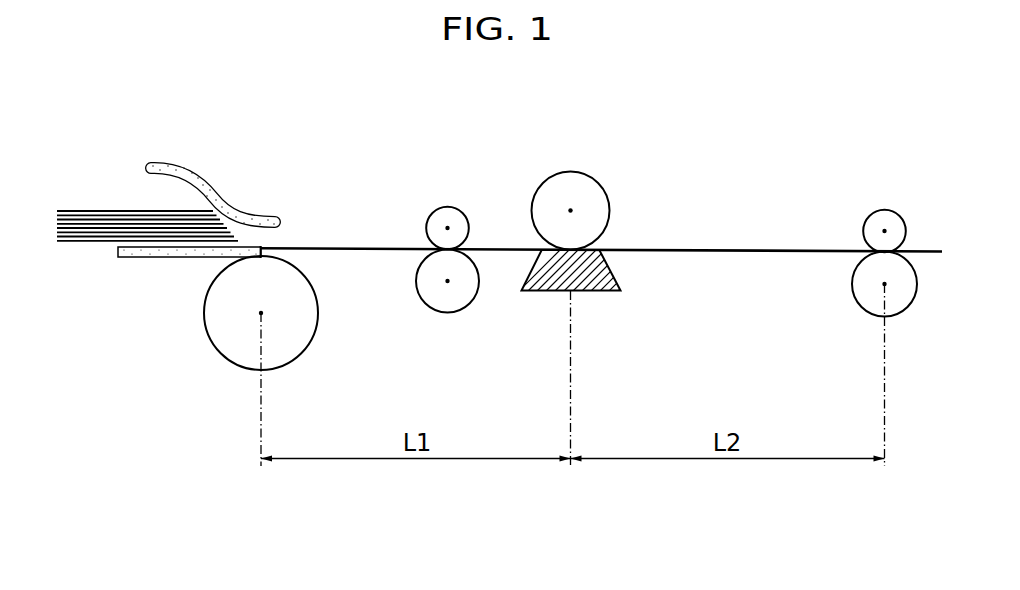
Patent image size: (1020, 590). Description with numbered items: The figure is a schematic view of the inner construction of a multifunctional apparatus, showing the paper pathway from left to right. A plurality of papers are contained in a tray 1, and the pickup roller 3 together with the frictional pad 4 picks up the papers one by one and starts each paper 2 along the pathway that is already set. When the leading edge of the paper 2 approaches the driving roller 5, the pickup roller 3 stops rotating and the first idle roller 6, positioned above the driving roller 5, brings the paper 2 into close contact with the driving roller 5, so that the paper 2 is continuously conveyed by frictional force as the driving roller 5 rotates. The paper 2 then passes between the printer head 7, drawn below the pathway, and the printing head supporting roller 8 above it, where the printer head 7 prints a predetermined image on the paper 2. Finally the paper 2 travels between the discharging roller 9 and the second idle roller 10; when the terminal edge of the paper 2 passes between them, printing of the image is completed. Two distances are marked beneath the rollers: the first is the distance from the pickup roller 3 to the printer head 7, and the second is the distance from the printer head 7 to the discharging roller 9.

The tray 1 is at (153, 257).
The paper 2 is at (108, 211).
The pickup roller 3 is at (204, 312).
The frictional pad 4 is at (213, 192).
The driving roller 5 is at (447, 313).
The first idle roller 6 is at (447, 206).
The printer head 7 is at (607, 290).
The printing head supporting roller 8 is at (571, 171).
The discharging roller 9 is at (855, 300).
The second idle roller 10 is at (884, 210).